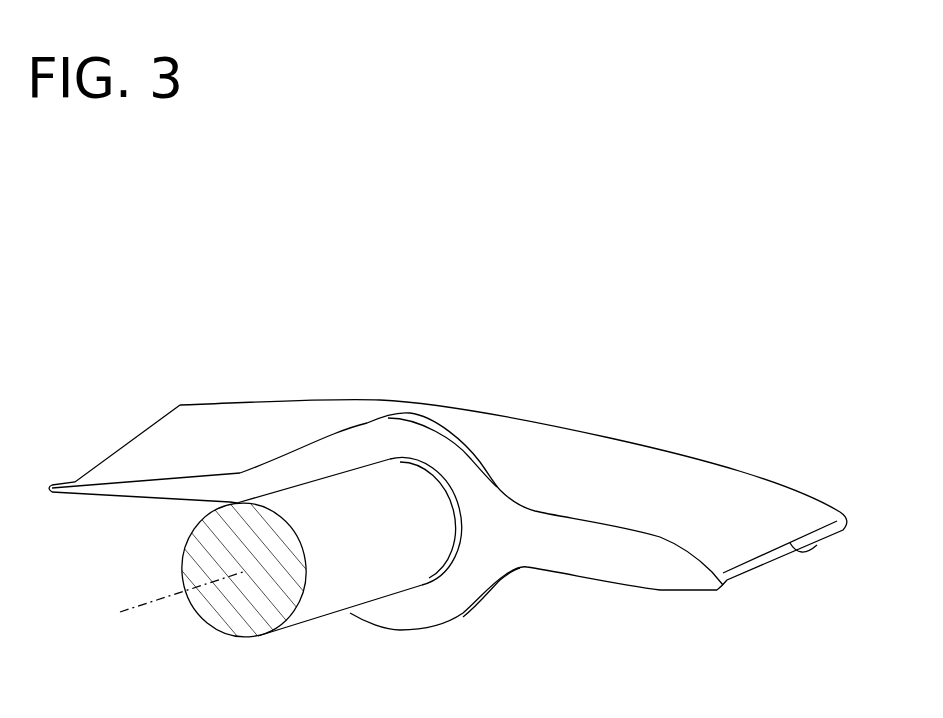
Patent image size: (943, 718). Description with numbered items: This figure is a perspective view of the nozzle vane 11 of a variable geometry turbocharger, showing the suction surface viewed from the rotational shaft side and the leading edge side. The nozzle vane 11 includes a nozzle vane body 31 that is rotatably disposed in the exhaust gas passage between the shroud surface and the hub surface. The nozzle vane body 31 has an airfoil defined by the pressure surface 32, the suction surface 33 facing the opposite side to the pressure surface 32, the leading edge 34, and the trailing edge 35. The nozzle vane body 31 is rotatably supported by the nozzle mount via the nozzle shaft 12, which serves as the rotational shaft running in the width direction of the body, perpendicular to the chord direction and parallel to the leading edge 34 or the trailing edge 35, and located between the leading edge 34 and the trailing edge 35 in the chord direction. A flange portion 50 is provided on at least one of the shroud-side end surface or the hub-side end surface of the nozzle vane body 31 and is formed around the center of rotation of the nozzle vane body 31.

The nozzle vane 11 is at (471, 216).
The nozzle shaft 12 is at (333, 598).
The nozzle vane body 31 is at (310, 417).
The pressure surface 32 is at (660, 594).
The suction surface 33 is at (658, 477).
The leading edge 34 is at (823, 520).
The trailing edge 35 is at (115, 453).
The flange portion 50 is at (441, 443).